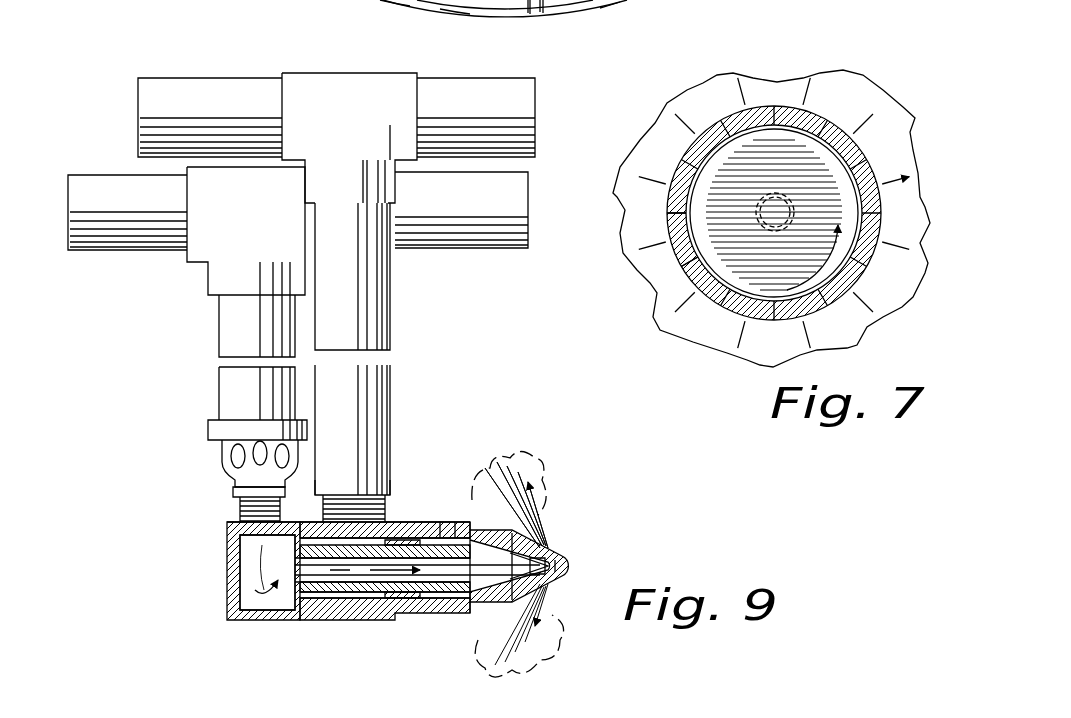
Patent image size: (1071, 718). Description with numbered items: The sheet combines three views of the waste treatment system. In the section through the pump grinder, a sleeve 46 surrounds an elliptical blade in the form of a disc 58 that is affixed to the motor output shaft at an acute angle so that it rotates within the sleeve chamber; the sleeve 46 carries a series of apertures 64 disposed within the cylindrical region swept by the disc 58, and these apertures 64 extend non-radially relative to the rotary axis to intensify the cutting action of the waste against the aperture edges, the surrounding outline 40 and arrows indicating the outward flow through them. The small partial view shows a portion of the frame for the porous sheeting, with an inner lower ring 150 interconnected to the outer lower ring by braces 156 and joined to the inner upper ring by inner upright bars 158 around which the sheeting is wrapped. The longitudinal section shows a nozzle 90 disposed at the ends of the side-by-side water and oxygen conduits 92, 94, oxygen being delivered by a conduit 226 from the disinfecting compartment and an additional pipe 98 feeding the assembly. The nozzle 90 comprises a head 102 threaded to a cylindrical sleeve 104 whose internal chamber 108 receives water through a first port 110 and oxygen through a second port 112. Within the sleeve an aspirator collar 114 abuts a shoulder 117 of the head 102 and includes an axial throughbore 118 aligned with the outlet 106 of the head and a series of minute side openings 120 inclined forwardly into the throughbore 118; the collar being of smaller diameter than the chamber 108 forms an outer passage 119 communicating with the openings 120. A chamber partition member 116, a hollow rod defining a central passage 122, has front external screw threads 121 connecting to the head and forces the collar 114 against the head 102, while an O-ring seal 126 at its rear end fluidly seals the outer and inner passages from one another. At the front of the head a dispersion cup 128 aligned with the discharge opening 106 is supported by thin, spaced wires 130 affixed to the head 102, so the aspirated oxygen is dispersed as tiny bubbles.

In FIG. 7, the fluid body / stream region 40 is at (808, 63).
In FIG. 7, the sleeve 46 is at (818, 95).
In FIG. 7, the disc 58 is at (795, 167).
In FIG. 7, the apertures 64 is at (858, 155).
In FIG. 8, the inner lower ring 150 is at (545, 0).
In FIG. 8, the braces 156 is at (460, 0).
In FIG. 8, the inner upright bars 158 is at (362, 0).
In FIG. 9, the conduit 226 is at (520, 107).
In FIG. 9, the supply pipe 98 is at (140, 247).
In FIG. 9, the water conduit 92 is at (223, 378).
In FIG. 9, the oxygen conduit 94 is at (390, 370).
In FIG. 9, the nozzle 90 is at (435, 556).
In FIG. 9, the first port 110 is at (225, 528).
In FIG. 9, the internal chamber 108 is at (248, 583).
In FIG. 9, the cylindrical sleeve 104 is at (227, 618).
In FIG. 9, the O-ring seal 126 is at (278, 623).
In FIG. 9, the chamber partition member 116 is at (395, 600).
In FIG. 9, the axial throughbore 118 is at (430, 598).
In FIG. 9, the outer passage 119 is at (483, 608).
In FIG. 9, the outlet 106 is at (552, 572).
In FIG. 9, the wires 130 is at (553, 583).
In FIG. 9, the dispersion cup 128 is at (568, 566).
In FIG. 9, the side openings 120 is at (537, 562).
In FIG. 9, the shoulder 117 is at (528, 555).
In FIG. 9, the aspirator collar 114 is at (510, 550).
In FIG. 9, the head 102 is at (482, 520).
In FIG. 9, the front external screw threads 121 is at (412, 538).
In FIG. 9, the central passage 122 is at (333, 493).
In FIG. 9, the second port 112 is at (390, 485).